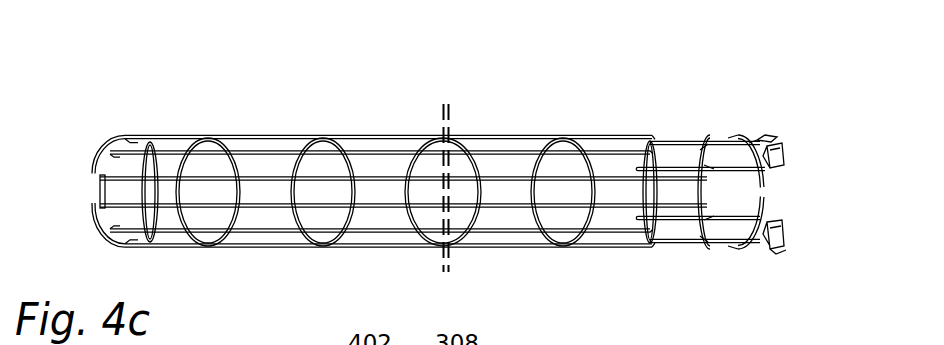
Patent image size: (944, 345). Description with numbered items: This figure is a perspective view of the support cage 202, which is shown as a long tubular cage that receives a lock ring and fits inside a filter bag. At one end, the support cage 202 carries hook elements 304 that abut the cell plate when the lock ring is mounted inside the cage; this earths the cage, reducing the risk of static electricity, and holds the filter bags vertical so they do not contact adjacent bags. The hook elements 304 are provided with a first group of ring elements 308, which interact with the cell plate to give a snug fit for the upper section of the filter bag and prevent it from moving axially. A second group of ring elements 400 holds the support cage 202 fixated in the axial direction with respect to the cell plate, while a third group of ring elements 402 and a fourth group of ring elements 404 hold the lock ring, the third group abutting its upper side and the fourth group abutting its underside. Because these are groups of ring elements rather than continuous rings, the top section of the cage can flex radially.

The support cage 202 is at (357, 64).
The hook elements 304 is at (808, 222).
The first group of ring elements 308 is at (770, 235).
The second group of ring elements 400 is at (702, 223).
The third group of ring elements 402 is at (776, 181).
The fourth group of ring elements 404 is at (748, 147).